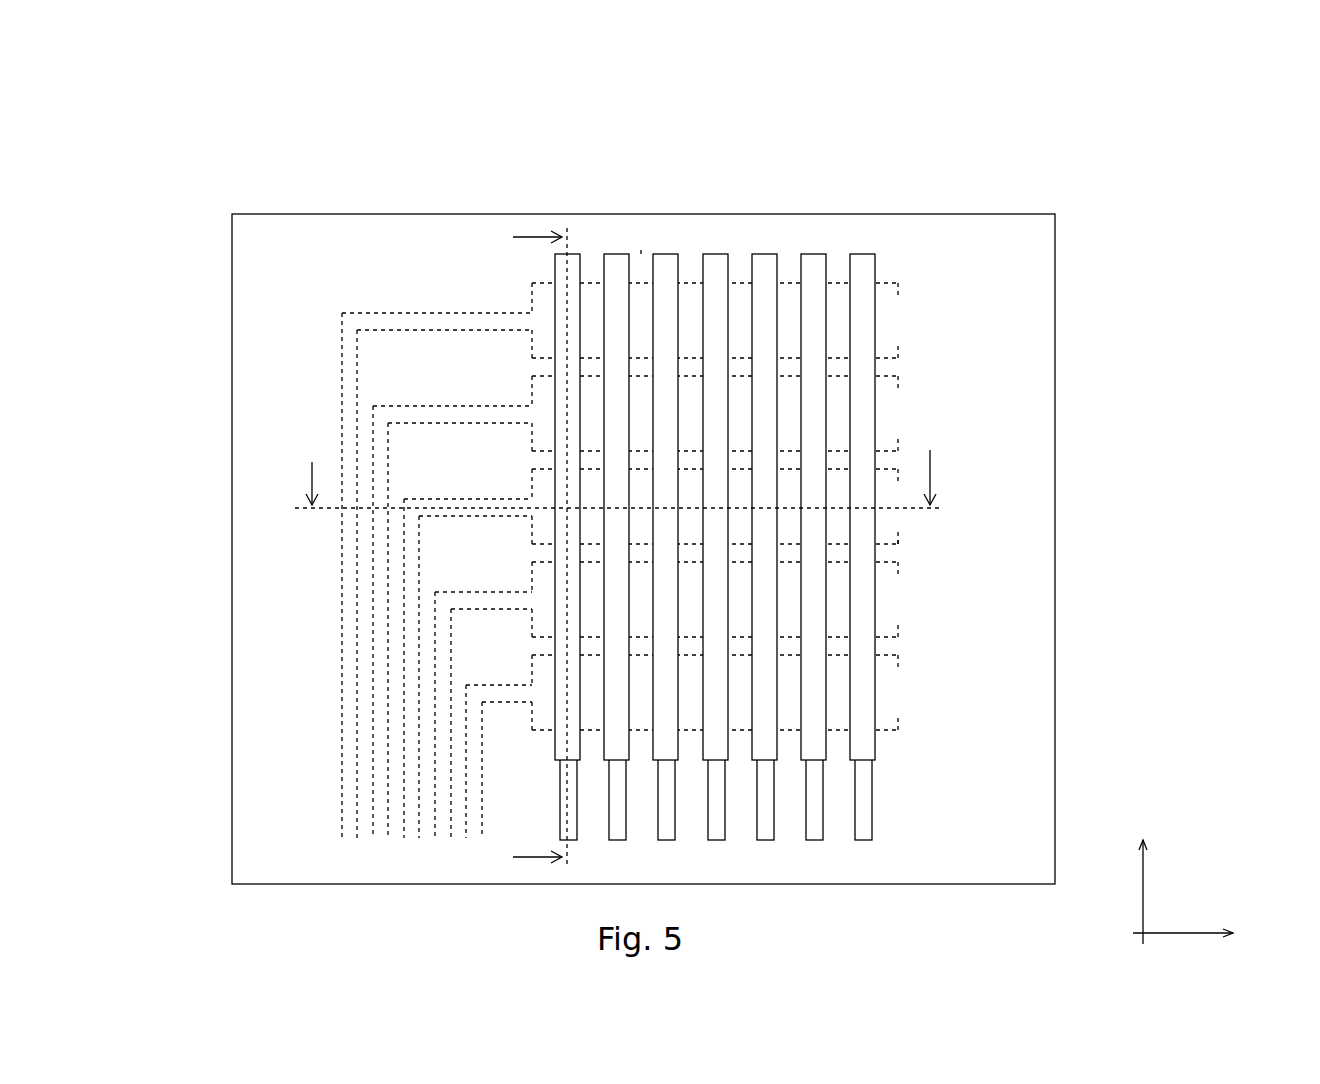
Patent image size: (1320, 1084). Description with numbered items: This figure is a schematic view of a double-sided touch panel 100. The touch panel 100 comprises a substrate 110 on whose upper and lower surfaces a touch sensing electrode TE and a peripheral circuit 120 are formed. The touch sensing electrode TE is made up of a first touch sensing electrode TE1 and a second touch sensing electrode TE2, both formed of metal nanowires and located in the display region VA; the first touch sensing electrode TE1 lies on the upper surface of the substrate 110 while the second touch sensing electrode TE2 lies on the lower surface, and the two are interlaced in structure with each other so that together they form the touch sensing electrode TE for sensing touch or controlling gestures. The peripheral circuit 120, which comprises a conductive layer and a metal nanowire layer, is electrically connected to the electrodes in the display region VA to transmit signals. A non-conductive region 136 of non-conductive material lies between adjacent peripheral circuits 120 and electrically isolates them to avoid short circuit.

The touch panel 100 is at (157, 66).
The substrate 110 is at (255, 258).
The peripheral circuit 120 is at (340, 350).
The non-conductive region 136 is at (890, 548).
The touch sensing electrode TE is at (765, 164).
The first touch sensing electrode TE1 is at (818, 254).
The second touch sensing electrode TE2 is at (890, 320).
The display region VA is at (644, 232).